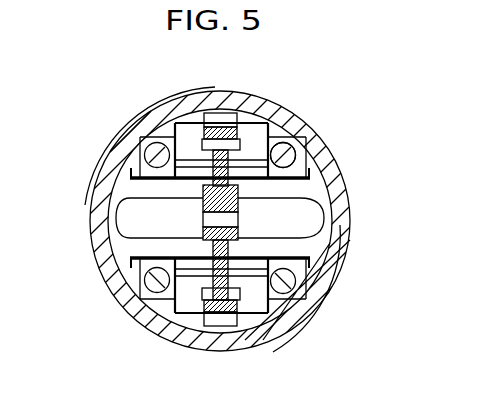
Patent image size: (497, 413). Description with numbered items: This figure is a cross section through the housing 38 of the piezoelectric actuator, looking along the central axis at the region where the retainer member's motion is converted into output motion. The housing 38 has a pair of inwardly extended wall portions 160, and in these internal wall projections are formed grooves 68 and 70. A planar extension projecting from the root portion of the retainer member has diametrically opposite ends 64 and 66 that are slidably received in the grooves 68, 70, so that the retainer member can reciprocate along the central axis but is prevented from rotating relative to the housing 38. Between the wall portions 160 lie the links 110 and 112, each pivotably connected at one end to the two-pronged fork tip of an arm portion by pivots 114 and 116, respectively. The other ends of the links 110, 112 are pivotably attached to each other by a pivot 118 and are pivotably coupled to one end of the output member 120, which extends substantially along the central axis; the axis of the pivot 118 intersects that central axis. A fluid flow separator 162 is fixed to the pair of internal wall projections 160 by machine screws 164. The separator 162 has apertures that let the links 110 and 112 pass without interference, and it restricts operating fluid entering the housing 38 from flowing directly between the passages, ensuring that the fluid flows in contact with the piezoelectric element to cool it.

The housing 38 is at (125, 143).
The end of planar extension 64 is at (292, 222).
The end of planar extension 66 is at (203, 218).
The groove 68 is at (335, 192).
The groove 70 is at (128, 209).
The link 110 is at (258, 150).
The link 112 is at (259, 318).
The pivot 114 is at (205, 148).
The pivot 116 is at (196, 310).
The pivot 118 is at (175, 252).
The output member 120 is at (327, 262).
The inwardly extended wall portions 160 is at (127, 190).
The fluid flow separator 162 is at (313, 153).
The machine screws 164 is at (108, 170).